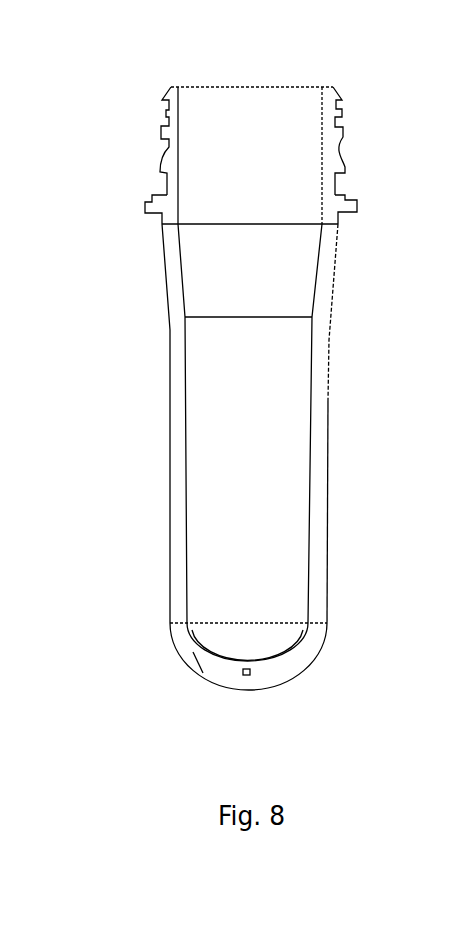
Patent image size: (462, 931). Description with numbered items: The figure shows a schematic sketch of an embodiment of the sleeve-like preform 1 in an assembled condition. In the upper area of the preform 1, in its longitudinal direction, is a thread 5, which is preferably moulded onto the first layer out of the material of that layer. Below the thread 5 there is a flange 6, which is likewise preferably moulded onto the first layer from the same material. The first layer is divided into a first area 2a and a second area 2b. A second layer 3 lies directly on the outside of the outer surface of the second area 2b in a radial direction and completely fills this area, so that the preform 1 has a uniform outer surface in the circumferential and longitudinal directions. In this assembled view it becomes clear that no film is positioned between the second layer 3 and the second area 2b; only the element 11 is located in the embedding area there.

The preform 1 is at (368, 91).
The thread 5 is at (171, 114).
The flange 6 is at (357, 203).
The first area of the first layer 2a is at (328, 400).
The second area of the first layer 2b is at (305, 638).
The second layer 3 is at (194, 653).
The element 11 is at (212, 660).